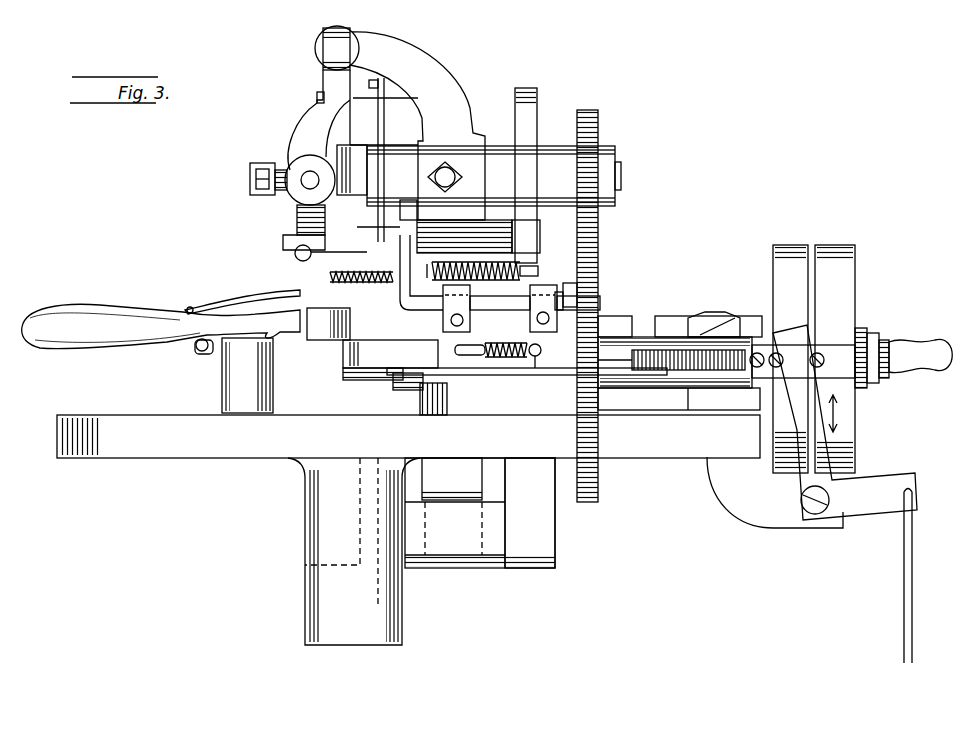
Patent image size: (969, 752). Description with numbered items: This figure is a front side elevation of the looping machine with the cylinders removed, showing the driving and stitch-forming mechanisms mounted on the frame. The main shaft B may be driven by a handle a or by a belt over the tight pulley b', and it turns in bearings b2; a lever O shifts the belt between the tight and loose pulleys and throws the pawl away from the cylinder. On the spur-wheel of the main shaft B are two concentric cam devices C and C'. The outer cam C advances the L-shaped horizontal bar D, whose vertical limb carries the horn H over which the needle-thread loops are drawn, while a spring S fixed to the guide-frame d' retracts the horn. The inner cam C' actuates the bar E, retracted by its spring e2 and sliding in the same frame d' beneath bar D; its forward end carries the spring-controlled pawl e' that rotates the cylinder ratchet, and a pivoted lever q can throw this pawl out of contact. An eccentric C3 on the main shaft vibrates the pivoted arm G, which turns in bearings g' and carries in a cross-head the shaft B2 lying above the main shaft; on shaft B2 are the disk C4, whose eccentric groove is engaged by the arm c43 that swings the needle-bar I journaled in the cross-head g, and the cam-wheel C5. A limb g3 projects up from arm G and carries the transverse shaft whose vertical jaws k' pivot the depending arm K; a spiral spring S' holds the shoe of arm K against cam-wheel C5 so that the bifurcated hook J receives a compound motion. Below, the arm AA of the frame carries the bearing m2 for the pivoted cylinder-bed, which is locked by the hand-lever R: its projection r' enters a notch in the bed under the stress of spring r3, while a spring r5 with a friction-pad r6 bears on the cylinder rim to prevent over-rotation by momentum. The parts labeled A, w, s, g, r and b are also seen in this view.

The base A is at (408, 436).
The bearing m2 is at (354, 551).
The pivoted arm G is at (480, 513).
The bearings g' is at (544, 513).
The cam or eccentric C3 is at (437, 415).
The gear wheel w is at (598, 128).
The horizontal shaft B2 is at (621, 178).
The limb g3 is at (446, 90).
The vertical jaws k' is at (337, 48).
The vertically-depending arm K is at (300, 130).
The cam-wheel C5 is at (316, 97).
The bifurcated hook J is at (317, 247).
The horn H is at (375, 164).
The needle-bar I is at (362, 226).
The L-shaped horizontal bar D is at (456, 226).
The screws s is at (451, 234).
The cross-head g is at (479, 234).
The arm c43 is at (512, 230).
The spring r is at (434, 269).
The disk C4 is at (524, 96).
The spiral spring S' is at (476, 283).
The spring S is at (490, 294).
The guide-frame d' is at (495, 327).
The pin b is at (504, 312).
The projection r' is at (314, 324).
The pawl e' is at (390, 360).
The horizontal bar E is at (457, 360).
The spring e2 is at (507, 358).
The pivoted lever q is at (545, 362).
The hand-lever R is at (161, 326).
The spring r3 is at (213, 352).
The spring r5 is at (262, 291).
The friction-pad r6 is at (310, 302).
The bearings b2 is at (752, 303).
The lever O is at (712, 320).
The main shaft B is at (876, 330).
The handle a is at (922, 350).
The tight pulley b' is at (812, 444).
The cam device C is at (591, 276).
The cam device C' is at (589, 291).